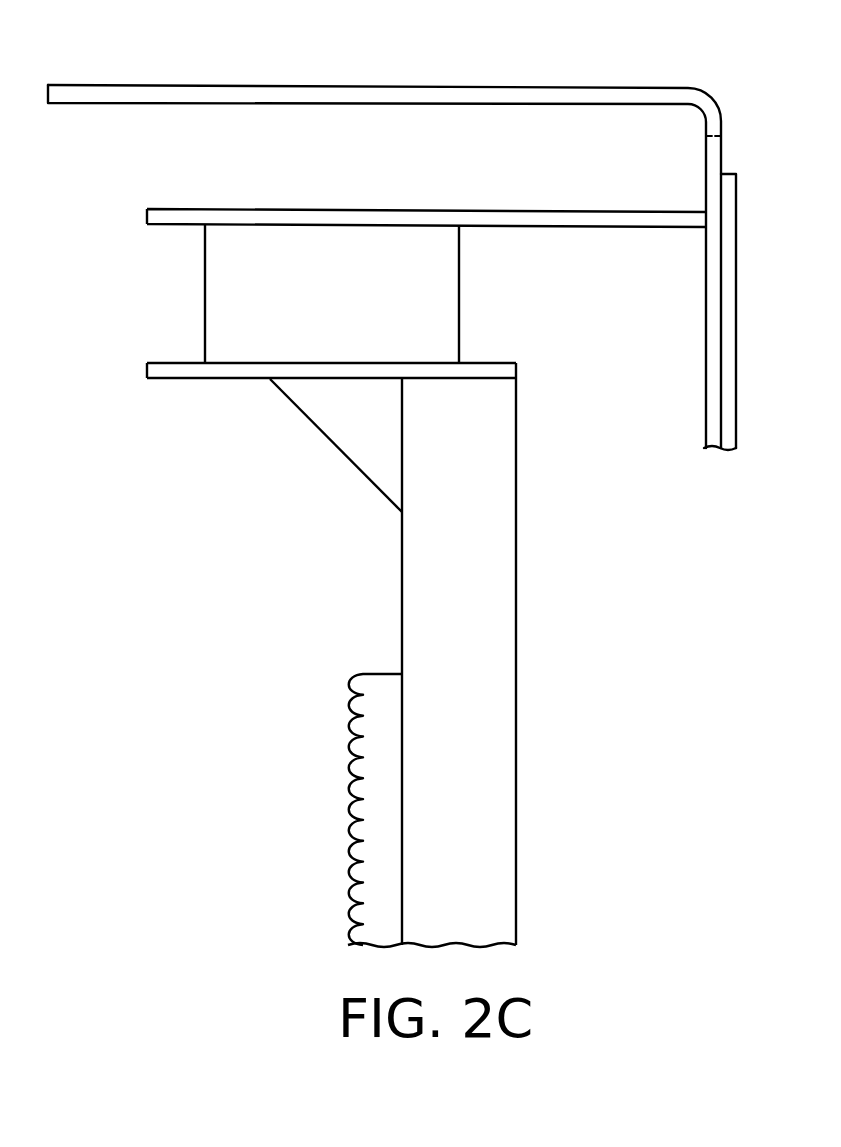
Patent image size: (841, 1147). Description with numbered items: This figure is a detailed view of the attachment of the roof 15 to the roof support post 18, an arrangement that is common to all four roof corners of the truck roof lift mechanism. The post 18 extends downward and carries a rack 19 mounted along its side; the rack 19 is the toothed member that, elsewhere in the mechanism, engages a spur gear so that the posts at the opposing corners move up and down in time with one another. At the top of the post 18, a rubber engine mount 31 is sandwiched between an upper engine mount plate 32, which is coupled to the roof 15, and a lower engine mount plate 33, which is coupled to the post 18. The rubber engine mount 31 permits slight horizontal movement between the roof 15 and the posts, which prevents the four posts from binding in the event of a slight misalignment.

The roof 15 is at (405, 87).
The roof support post 18 is at (495, 678).
The rack 19 is at (375, 810).
The rubber engine mount 31 is at (228, 296).
The upper engine mount plate 32 is at (318, 219).
The lower engine mount plate 33 is at (262, 372).